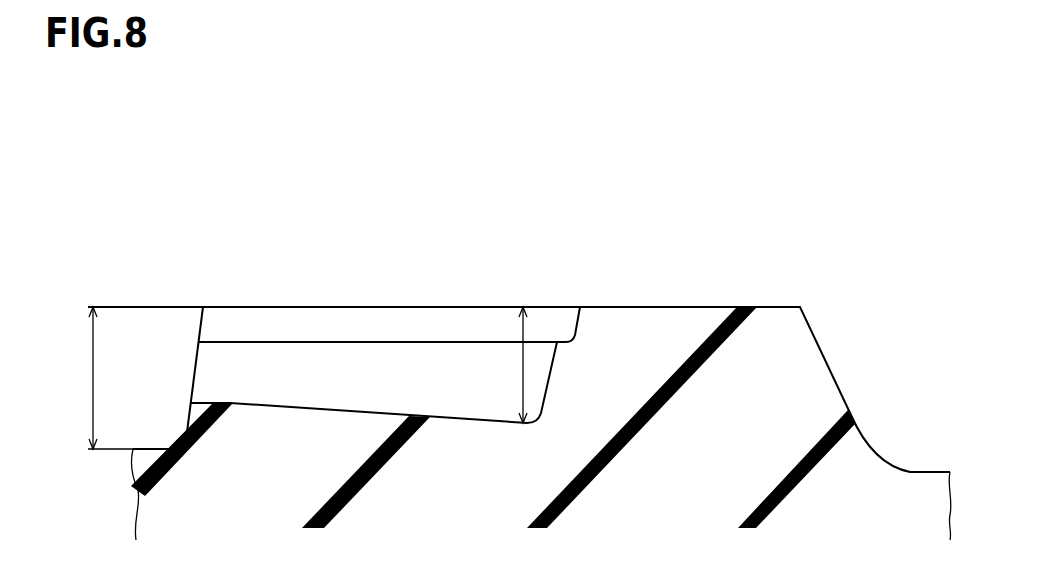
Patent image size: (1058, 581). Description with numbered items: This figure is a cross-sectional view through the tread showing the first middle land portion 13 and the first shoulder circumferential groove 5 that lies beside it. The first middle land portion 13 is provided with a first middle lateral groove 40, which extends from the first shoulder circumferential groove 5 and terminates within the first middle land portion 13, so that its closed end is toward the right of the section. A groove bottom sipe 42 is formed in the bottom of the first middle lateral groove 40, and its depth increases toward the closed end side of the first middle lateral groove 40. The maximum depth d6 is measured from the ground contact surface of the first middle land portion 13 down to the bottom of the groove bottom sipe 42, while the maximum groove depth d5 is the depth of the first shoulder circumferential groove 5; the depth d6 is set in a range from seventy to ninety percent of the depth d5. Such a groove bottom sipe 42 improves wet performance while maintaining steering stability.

The first middle land portion 13 is at (723, 307).
The first shoulder circumferential groove 5 is at (178, 437).
The first middle lateral groove 40 is at (283, 333).
The groove bottom sipe 42 is at (365, 407).
The maximum groove depth d5 is at (91, 378).
The maximum depth d6 is at (522, 367).